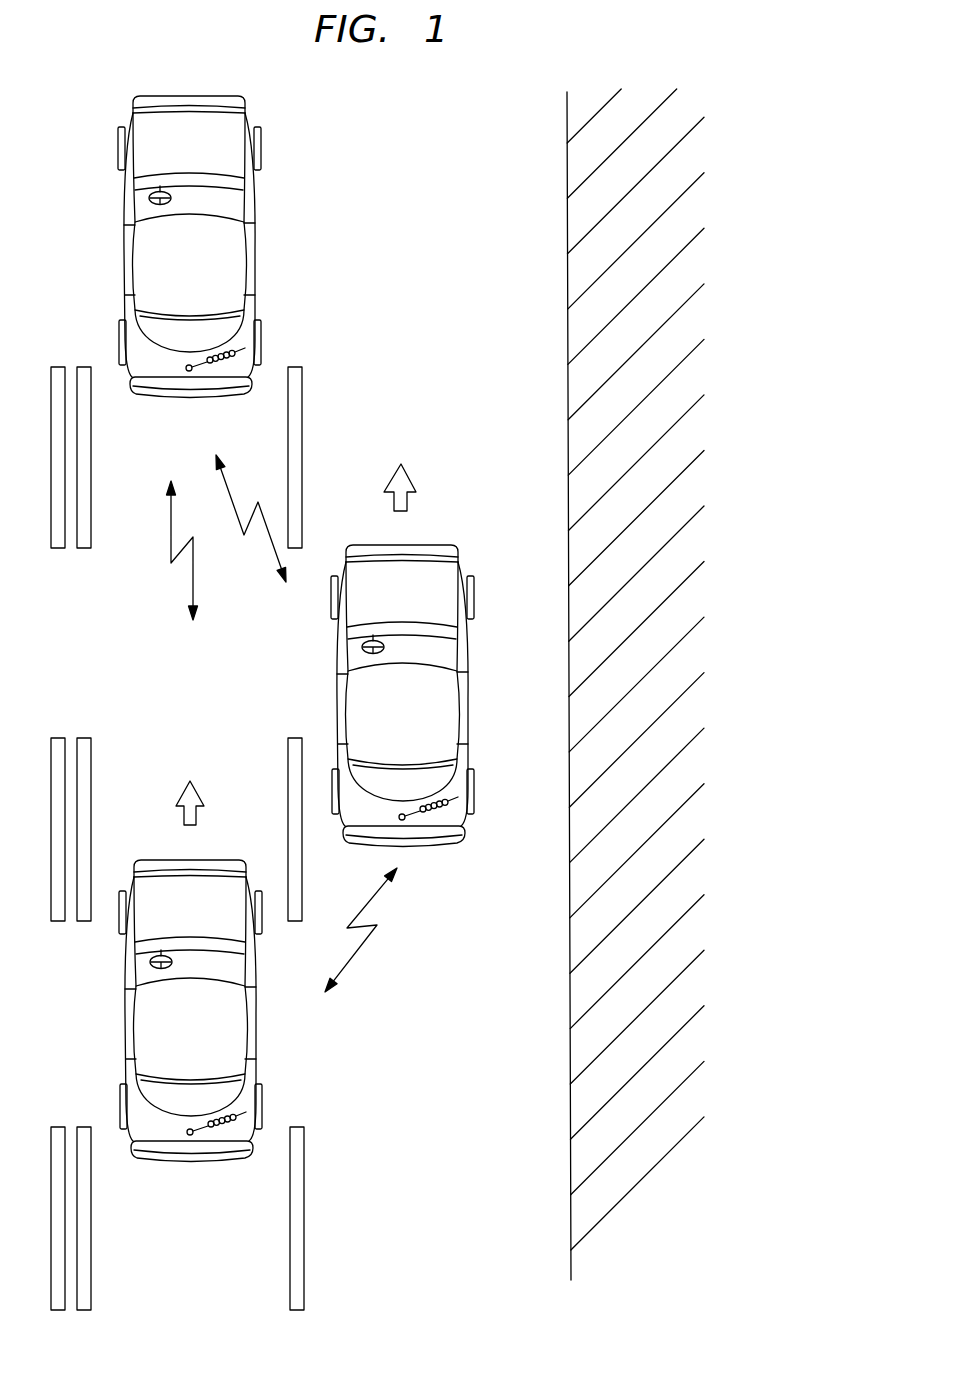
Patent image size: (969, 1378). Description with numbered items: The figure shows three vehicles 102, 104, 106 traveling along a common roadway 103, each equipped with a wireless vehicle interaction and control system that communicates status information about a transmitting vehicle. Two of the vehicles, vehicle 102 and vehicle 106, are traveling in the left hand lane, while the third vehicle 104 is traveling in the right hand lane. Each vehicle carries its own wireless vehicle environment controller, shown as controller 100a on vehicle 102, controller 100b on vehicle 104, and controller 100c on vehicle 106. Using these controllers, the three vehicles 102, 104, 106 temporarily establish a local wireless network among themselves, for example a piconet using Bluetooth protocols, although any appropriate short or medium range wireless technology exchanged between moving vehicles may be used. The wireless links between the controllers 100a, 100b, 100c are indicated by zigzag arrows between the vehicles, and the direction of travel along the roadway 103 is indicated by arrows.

The wireless vehicle environment controller 100a is at (204, 385).
The wireless vehicle environment controller 100b is at (442, 835).
The wireless vehicle environment controller 100c is at (231, 1151).
The vehicle 102 is at (278, 262).
The roadway 103 is at (483, 335).
The vehicle 104 is at (490, 711).
The vehicle 106 is at (280, 1023).